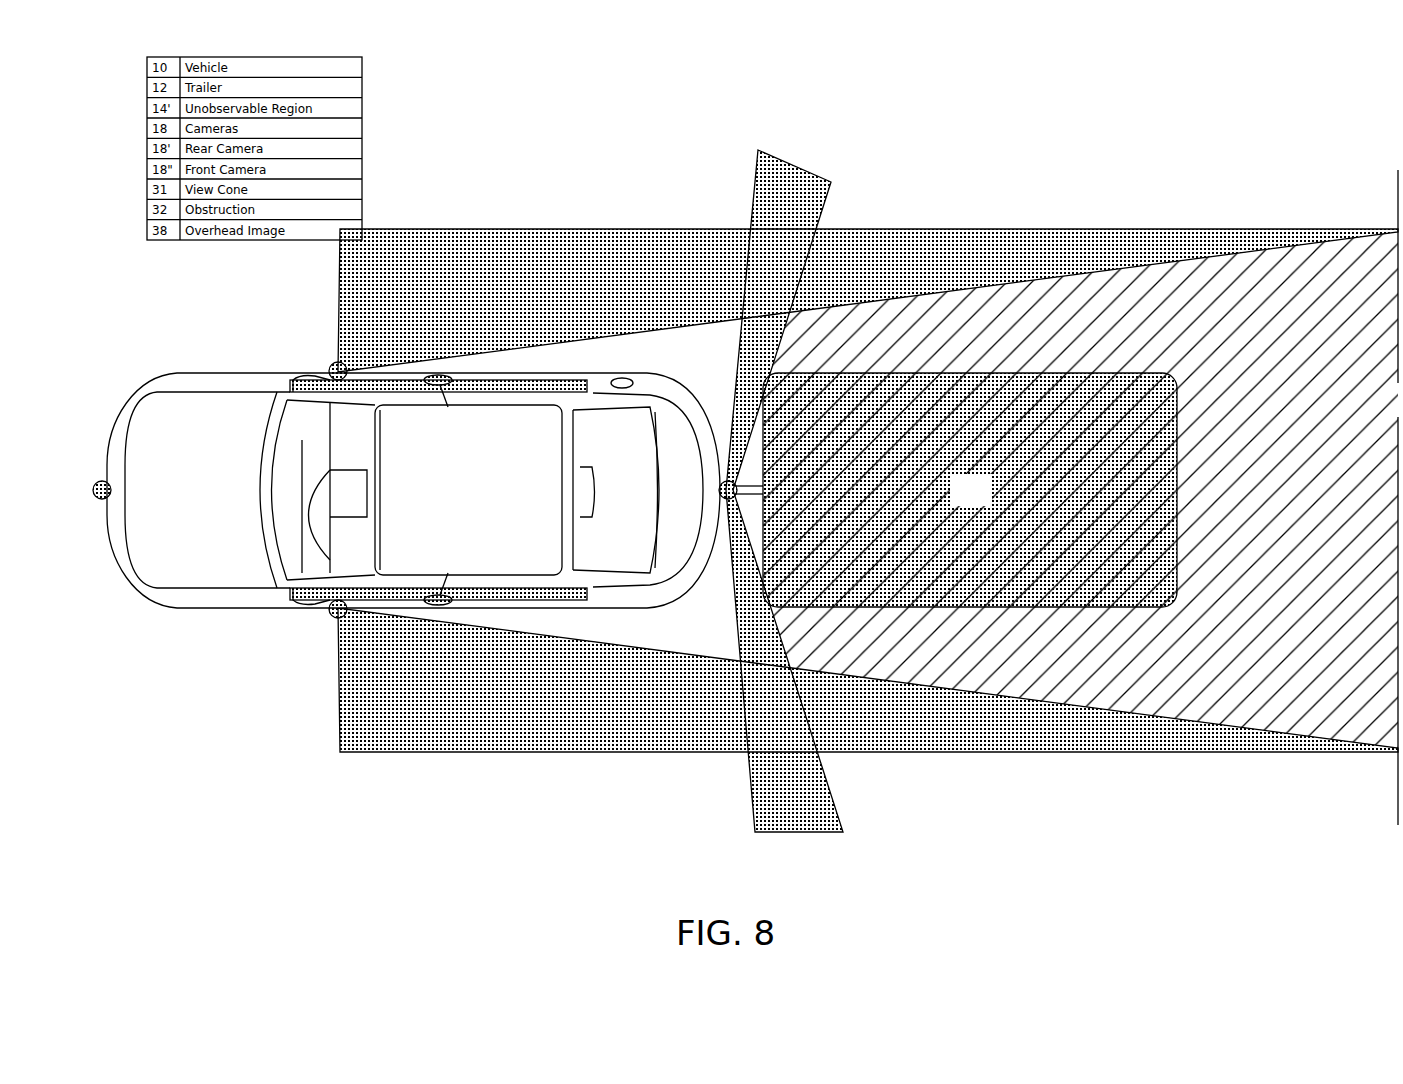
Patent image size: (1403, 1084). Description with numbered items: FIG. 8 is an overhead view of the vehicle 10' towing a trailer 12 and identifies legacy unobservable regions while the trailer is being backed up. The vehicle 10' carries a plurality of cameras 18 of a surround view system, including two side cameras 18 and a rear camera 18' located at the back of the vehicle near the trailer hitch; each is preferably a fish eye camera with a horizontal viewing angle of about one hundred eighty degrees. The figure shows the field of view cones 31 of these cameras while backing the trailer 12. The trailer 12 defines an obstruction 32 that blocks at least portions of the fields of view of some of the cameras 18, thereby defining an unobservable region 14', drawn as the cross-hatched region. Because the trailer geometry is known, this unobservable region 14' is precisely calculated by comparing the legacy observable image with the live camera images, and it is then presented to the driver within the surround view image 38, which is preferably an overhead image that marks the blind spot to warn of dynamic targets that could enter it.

The vehicle 10' is at (413, 465).
The trailer 12 is at (1180, 490).
The unobservable region 14' is at (1059, 465).
The cameras 18 is at (364, 493).
The rear camera 18' is at (666, 523).
The field of view cones 31 is at (550, 240).
The obstruction 32 is at (957, 502).
The surround view image 38 is at (922, 211).